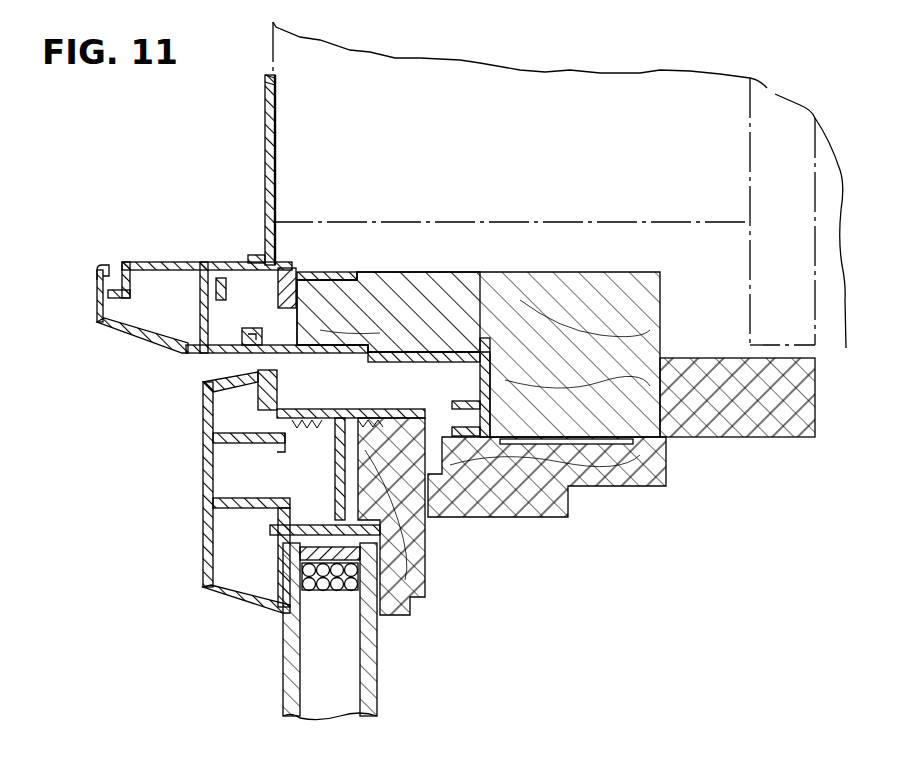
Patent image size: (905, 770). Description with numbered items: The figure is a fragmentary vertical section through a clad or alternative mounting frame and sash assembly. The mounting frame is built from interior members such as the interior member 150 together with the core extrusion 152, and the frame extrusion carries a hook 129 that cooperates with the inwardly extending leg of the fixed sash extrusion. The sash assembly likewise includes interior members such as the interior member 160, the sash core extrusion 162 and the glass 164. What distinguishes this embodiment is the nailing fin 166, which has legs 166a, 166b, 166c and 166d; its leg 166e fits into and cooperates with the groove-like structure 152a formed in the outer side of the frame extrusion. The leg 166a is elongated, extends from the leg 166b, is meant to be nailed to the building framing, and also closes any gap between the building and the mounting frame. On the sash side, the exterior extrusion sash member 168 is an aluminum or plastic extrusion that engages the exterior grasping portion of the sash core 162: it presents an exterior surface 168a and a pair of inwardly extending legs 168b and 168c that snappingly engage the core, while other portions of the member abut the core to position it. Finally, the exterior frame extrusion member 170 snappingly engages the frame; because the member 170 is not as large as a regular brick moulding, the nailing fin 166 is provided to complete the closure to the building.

The frame extrusion hook 129 is at (463, 400).
The interior member 150 is at (646, 428).
The core extrusion 152 is at (262, 352).
The groove-like structure 152a is at (388, 312).
The interior member 160 is at (418, 580).
The core extrusion 162 is at (333, 478).
The glass 164 is at (370, 662).
The nailing fin 166 is at (258, 132).
The leg 166a is at (265, 100).
The leg 166b is at (253, 256).
The leg 166c is at (282, 258).
The leg 166d is at (303, 270).
The leg 166e is at (278, 304).
The exterior extrusion sash member 168 is at (204, 458).
The exterior surface 168a is at (203, 530).
The inwardly extending leg 168b is at (238, 440).
The inwardly extending leg 168c is at (245, 508).
The exterior frame extrusion member 170 is at (90, 323).